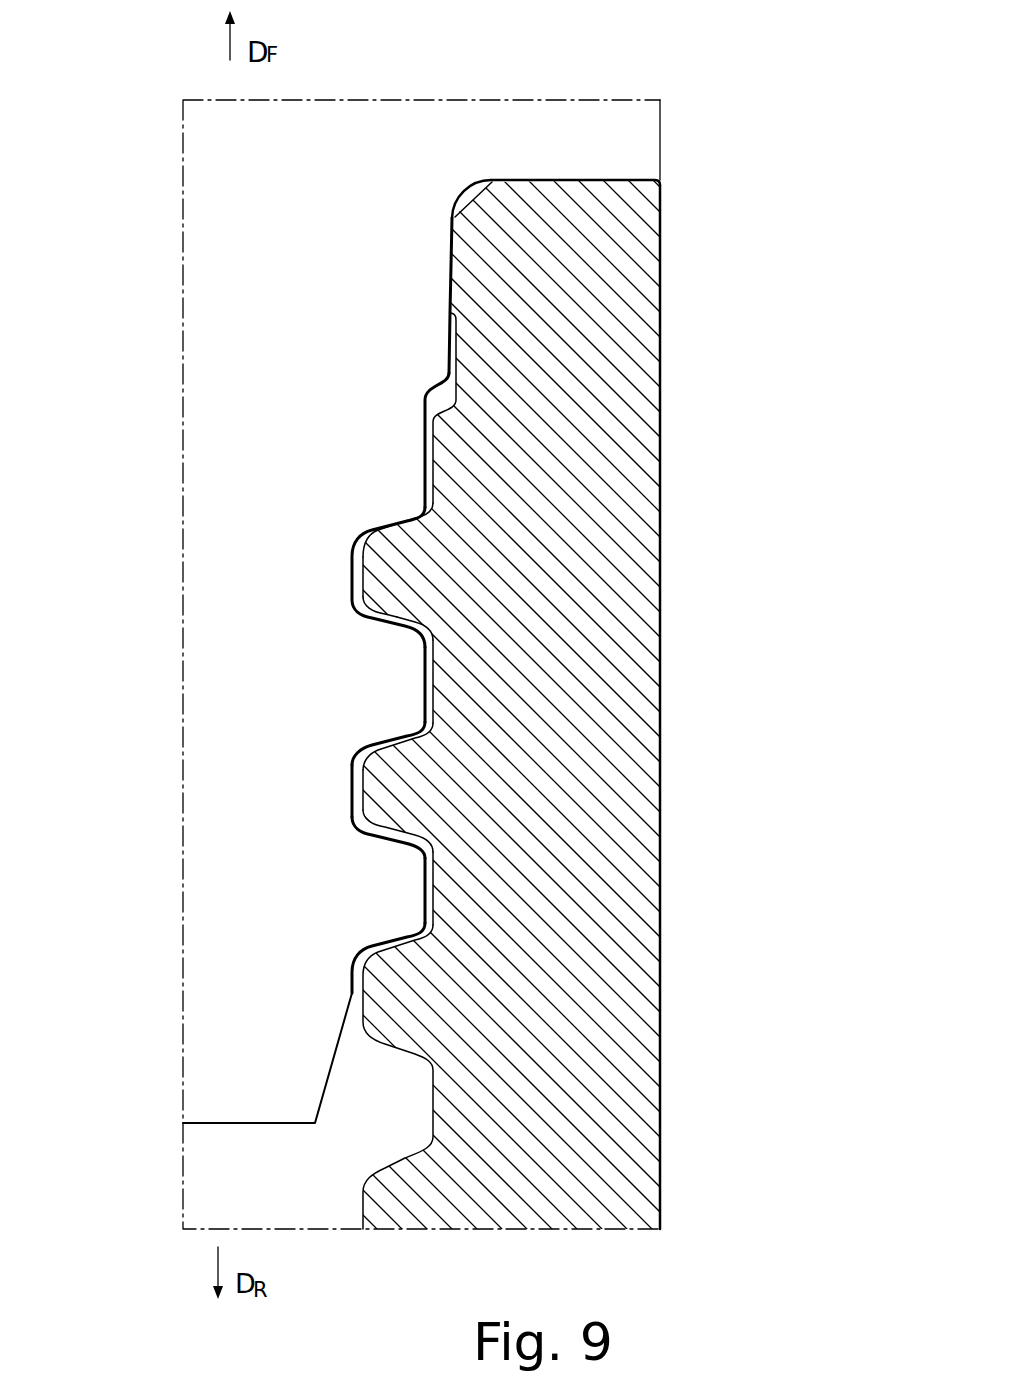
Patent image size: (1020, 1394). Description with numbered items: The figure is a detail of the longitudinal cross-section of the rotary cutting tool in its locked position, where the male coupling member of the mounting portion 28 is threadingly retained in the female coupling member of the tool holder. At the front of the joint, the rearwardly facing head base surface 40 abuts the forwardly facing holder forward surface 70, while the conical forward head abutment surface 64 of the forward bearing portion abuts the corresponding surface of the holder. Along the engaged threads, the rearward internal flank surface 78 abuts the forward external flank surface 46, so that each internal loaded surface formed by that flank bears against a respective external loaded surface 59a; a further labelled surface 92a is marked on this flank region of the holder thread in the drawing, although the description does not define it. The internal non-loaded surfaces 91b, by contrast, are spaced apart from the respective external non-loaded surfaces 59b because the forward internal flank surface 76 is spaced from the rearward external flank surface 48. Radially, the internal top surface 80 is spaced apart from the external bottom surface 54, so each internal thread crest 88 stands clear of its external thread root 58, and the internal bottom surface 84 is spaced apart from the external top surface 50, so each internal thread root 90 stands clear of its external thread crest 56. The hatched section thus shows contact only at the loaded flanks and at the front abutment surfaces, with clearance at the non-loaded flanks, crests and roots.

The mounting portion 28 is at (263, 162).
The head base surface 40 is at (623, 183).
The holder forward surface 70 is at (572, 180).
The forward head abutment surface 64 is at (453, 280).
The internal thread roots 90 is at (450, 237).
The external bottom surface 54 is at (354, 563).
The rearward external flank surface 48 is at (431, 602).
The forward internal flank surface 76 is at (396, 520).
The internal top surface 80 is at (352, 567).
The rearward internal flank surface 78 is at (392, 632).
The forward external flank surface 46 is at (365, 606).
The external top surface 50 is at (427, 677).
The internal bottom surface 84 is at (420, 722).
The internal non-loaded surfaces 91b is at (358, 740).
The external non-loaded surfaces 59b is at (400, 742).
The external thread roots 58 is at (363, 797).
The external loaded surfaces 59a is at (402, 838).
The second groove lower flank coating 92a is at (392, 835).
The internal thread crests 88 is at (427, 902).
The external thread crests 56 is at (428, 912).